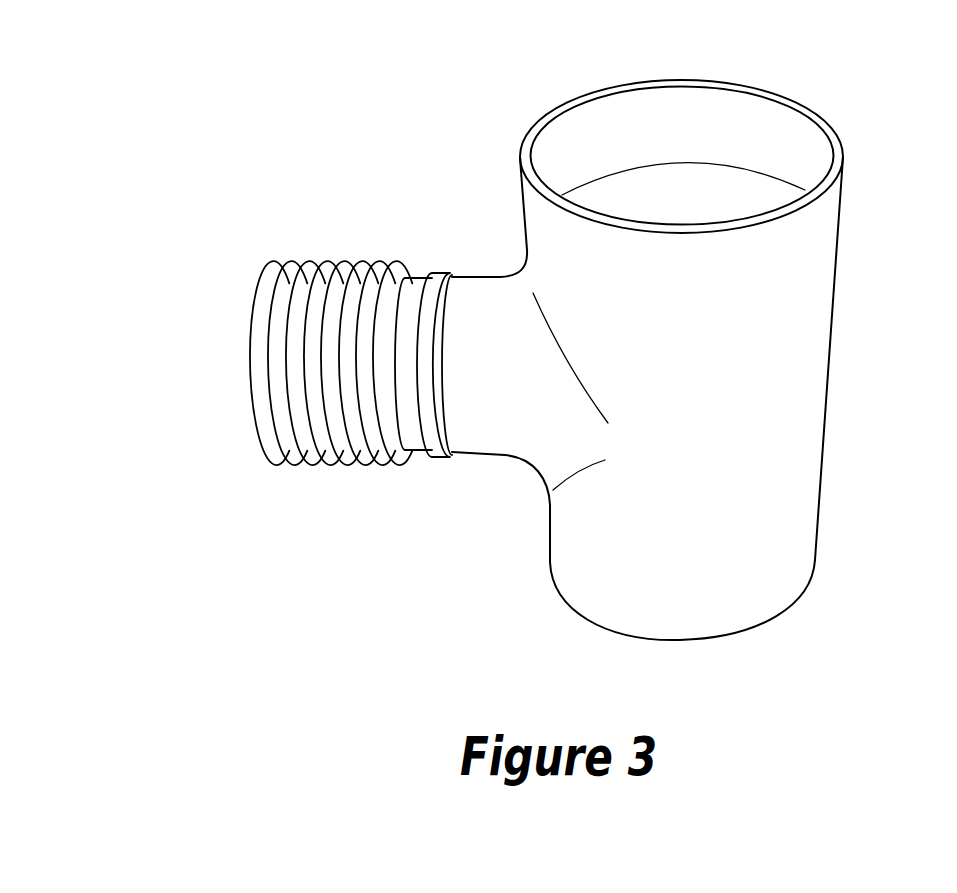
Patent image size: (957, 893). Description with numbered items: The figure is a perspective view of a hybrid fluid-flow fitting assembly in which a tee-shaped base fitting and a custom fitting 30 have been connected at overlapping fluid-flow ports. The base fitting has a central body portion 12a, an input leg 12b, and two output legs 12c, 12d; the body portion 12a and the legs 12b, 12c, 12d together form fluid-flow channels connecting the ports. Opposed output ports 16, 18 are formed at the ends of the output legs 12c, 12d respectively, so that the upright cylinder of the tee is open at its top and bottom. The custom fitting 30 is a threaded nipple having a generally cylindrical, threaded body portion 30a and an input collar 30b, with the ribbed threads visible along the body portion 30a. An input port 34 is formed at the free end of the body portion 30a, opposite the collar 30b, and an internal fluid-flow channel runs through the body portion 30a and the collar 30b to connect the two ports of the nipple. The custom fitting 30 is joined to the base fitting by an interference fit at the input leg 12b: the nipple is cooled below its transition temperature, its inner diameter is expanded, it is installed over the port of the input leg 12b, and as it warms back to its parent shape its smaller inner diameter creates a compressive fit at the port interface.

The output port 16 is at (743, 90).
The central body portion 12a is at (782, 367).
The input leg 12b is at (547, 400).
The output leg 12c is at (790, 526).
The output leg 12d is at (805, 253).
The output port 18 is at (745, 632).
The custom fitting 30 is at (276, 377).
The threaded body portion 30a is at (315, 470).
The input collar 30b is at (442, 275).
The input port 34 is at (250, 370).